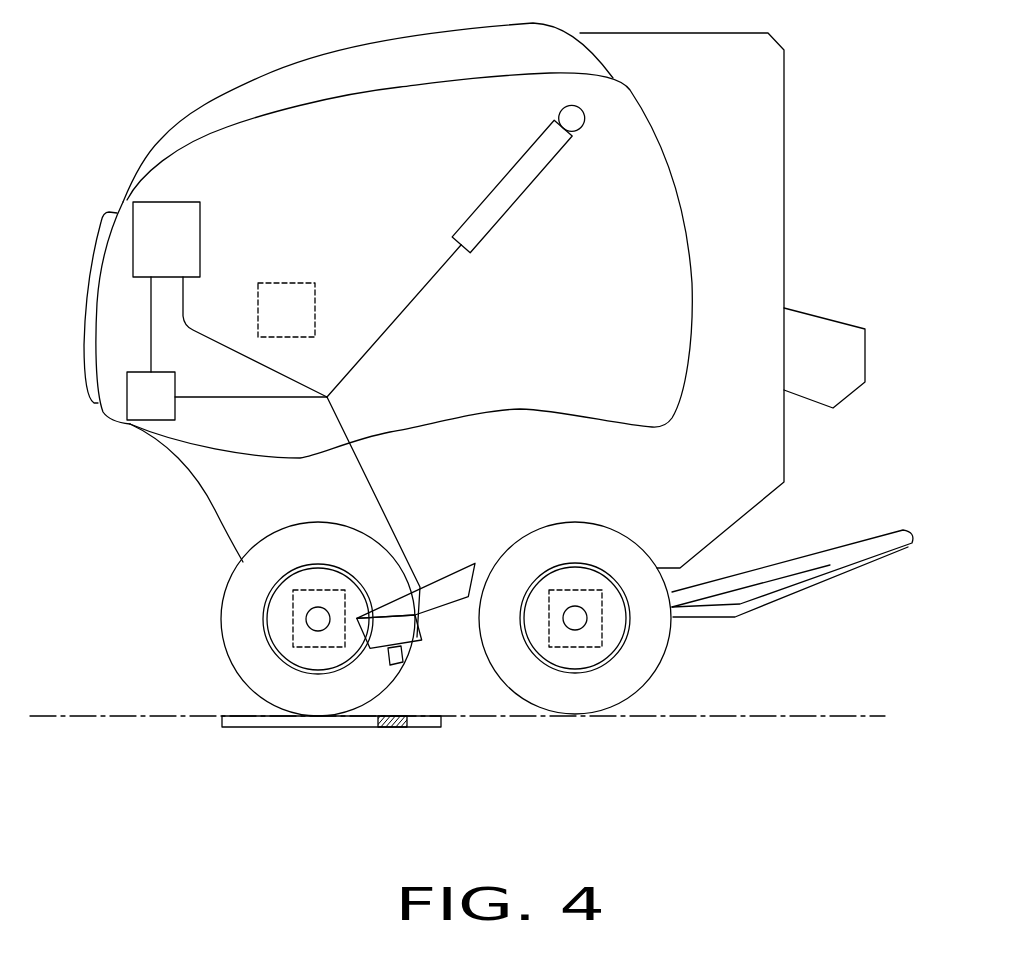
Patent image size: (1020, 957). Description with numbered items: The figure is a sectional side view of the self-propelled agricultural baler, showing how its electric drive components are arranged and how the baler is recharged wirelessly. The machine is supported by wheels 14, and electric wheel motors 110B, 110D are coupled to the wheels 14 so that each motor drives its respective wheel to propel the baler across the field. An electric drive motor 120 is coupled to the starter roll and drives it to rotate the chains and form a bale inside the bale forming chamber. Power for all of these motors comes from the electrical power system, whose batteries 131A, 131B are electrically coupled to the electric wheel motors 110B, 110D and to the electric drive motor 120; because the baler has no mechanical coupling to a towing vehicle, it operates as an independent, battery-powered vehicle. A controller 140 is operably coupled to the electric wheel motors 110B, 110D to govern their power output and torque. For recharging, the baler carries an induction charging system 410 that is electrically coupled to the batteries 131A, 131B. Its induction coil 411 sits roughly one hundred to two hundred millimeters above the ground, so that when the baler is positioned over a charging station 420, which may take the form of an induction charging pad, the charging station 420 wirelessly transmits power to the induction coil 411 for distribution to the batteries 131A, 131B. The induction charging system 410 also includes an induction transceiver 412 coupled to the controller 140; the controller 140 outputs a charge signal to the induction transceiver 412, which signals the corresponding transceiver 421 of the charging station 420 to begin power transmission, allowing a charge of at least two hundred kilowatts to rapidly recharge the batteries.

The wheels 14 is at (243, 679).
The electric wheel motor 110B is at (293, 610).
The electric wheel motor 110D is at (603, 621).
The electric drive motor 120 is at (131, 427).
The battery 131A is at (458, 568).
The battery 131B is at (200, 217).
The controller 140 is at (315, 290).
The induction charging system 410 is at (392, 613).
The induction coil 411 is at (419, 641).
The induction transceiver 412 is at (397, 667).
The charging station 420 is at (328, 729).
The transceiver 421 is at (393, 730).